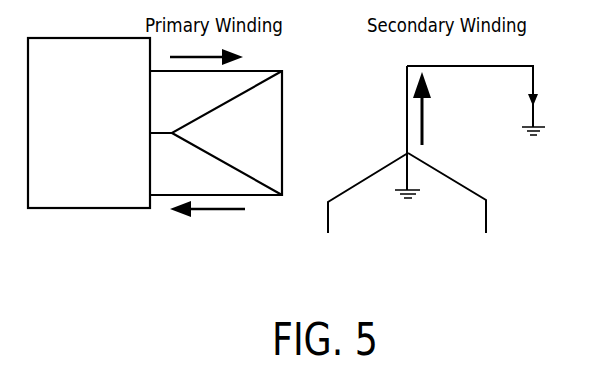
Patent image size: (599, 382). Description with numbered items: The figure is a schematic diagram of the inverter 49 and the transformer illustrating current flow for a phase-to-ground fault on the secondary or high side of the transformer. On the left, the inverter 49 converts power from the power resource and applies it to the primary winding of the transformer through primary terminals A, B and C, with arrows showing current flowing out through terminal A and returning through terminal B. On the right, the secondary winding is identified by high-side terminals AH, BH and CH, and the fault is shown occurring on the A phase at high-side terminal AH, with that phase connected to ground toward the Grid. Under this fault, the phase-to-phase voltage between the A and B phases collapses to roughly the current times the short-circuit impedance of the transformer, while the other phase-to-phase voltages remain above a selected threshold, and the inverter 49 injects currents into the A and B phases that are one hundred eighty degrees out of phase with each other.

The inverter 49 is at (89, 123).
The primary terminal A is at (222, 87).
The primary terminal B is at (223, 177).
The primary terminal C is at (216, 133).
The high-side terminal AH is at (414, 117).
The high-side terminal BH is at (465, 193).
The high-side terminal CH is at (358, 193).
The grid Grid is at (487, 115).